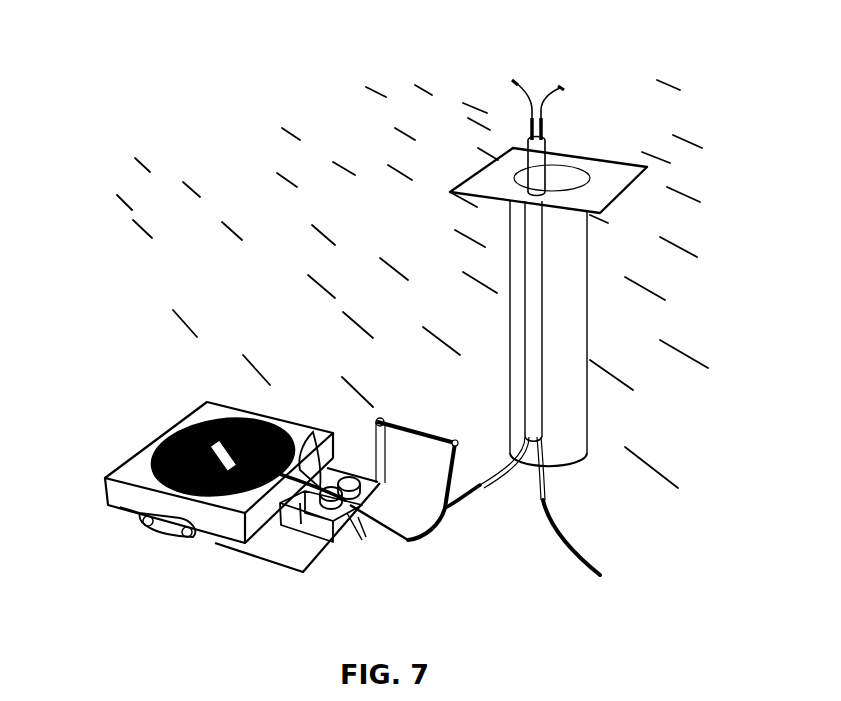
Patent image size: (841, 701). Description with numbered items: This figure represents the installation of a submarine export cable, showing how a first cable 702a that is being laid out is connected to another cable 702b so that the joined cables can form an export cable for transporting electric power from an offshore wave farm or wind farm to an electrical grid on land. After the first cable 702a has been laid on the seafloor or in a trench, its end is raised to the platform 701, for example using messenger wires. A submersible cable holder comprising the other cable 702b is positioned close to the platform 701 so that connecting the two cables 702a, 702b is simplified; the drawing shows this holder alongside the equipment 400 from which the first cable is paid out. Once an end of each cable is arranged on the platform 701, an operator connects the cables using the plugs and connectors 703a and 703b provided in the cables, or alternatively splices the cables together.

The turntable dispensing device 400 is at (167, 418).
The platform 701 is at (567, 162).
The first cable 702a is at (442, 527).
The another cable 702b is at (590, 545).
The plug and connector 703a is at (520, 72).
The plug and connector 703b is at (560, 72).